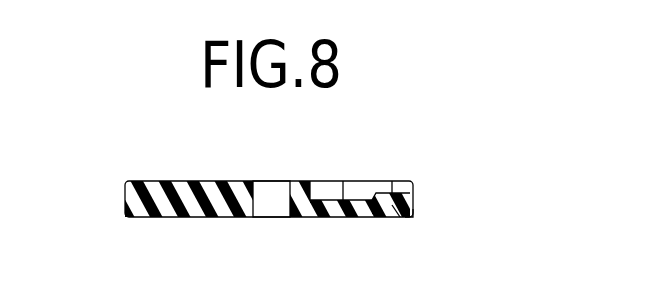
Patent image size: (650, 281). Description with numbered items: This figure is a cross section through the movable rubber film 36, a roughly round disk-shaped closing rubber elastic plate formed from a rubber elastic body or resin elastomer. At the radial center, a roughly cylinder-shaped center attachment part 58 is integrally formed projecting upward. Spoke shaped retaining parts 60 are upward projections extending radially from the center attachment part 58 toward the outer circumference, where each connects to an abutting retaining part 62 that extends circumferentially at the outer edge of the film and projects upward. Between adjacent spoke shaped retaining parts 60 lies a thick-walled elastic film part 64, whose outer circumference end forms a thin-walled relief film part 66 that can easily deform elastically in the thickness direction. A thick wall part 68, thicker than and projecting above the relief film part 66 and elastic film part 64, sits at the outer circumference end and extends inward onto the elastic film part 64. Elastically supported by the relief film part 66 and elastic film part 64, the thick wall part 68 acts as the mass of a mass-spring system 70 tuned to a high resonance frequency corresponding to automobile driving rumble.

The movable rubber film 36 is at (139, 156).
The center attachment part 58 is at (297, 190).
The spoke shaped retaining part 60 is at (203, 188).
The abutting retaining part 62 is at (138, 190).
The elastic film part 64 is at (341, 208).
The relief film part 66 is at (396, 212).
The thick wall part 68 is at (388, 200).
The mass-spring system 70 is at (405, 222).